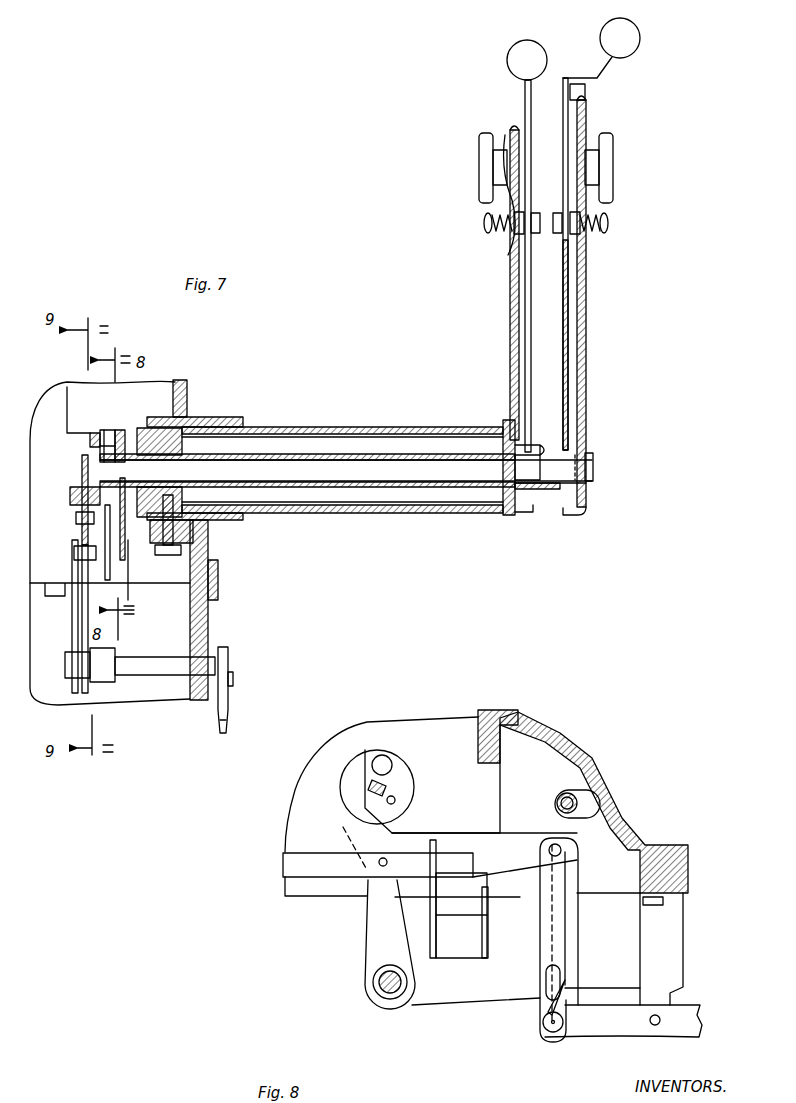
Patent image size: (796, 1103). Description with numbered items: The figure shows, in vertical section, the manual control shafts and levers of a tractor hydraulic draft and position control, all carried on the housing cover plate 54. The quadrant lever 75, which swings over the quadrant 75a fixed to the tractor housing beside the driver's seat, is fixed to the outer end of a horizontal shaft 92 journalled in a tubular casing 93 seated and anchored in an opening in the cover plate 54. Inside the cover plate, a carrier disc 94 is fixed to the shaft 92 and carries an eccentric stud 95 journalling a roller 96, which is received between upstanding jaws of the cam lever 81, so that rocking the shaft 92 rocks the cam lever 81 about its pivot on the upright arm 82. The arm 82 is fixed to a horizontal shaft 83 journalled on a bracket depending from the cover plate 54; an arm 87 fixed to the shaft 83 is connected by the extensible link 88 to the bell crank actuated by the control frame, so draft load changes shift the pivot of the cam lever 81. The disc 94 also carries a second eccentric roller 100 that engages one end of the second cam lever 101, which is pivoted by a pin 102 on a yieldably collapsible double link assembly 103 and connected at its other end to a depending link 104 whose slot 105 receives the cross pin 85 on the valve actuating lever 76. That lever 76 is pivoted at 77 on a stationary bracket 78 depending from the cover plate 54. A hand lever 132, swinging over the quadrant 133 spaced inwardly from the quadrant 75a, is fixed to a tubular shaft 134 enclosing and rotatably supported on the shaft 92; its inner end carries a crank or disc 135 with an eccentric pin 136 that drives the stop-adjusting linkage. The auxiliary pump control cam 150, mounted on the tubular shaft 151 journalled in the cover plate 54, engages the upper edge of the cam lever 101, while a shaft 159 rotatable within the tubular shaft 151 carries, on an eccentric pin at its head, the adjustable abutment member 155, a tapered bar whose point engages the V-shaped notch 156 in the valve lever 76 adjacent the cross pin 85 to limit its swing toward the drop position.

In FIG. 7, the hand lever 132 is at (520, 62).
In FIG. 7, the quadrant lever 75 is at (603, 72).
In FIG. 7, the quadrant 133 is at (510, 322).
In FIG. 7, the quadrant 75a is at (590, 328).
In FIG. 7, the housing cover plate 54 is at (240, 420).
In FIG. 8, the housing cover plate 54 is at (494, 712).
In FIG. 7, the tubular casing 93 is at (350, 427).
In FIG. 7, the tubular shaft 134 is at (400, 455).
In FIG. 7, the shaft 92 is at (480, 468).
In FIG. 8, the shaft 92 is at (392, 786).
In FIG. 7, the roller 100 is at (110, 434).
In FIG. 8, the roller 100 is at (380, 757).
In FIG. 7, the crank or disc 135 is at (125, 432).
In FIG. 7, the carrier 94 is at (90, 440).
In FIG. 8, the carrier 94 is at (395, 805).
In FIG. 7, the stud 95 is at (85, 495).
In FIG. 7, the roller 96 is at (80, 515).
In FIG. 7, the cam lever 81 is at (80, 536).
In FIG. 7, the cam lever 101 is at (80, 558).
In FIG. 8, the cam lever 101 is at (465, 840).
In FIG. 7, the pin 136 is at (165, 548).
In FIG. 7, the pin 102 is at (118, 552).
In FIG. 8, the pin 102 is at (378, 870).
In FIG. 7, the double link assembly 103 is at (128, 562).
In FIG. 8, the double link assembly 103 is at (283, 862).
In FIG. 7, the upright arm 82 is at (85, 622).
In FIG. 8, the upright arm 82 is at (372, 927).
In FIG. 7, the arm 87 is at (226, 650).
In FIG. 7, the shaft 83 is at (185, 670).
In FIG. 8, the shaft 83 is at (378, 978).
In FIG. 7, the link 88 is at (228, 722).
In FIG. 8, the shaft 159 is at (559, 796).
In FIG. 8, the tubular shaft 151 is at (568, 794).
In FIG. 8, the cam 150 is at (605, 800).
In FIG. 8, the link 104 is at (548, 932).
In FIG. 8, the slot 105 is at (550, 977).
In FIG. 8, the cross pin 85 is at (545, 1020).
In FIG. 8, the abutment member 155 is at (575, 922).
In FIG. 8, the V-shaped notch 156 is at (570, 1005).
In FIG. 8, the stationary bracket 78 is at (675, 943).
In FIG. 8, the valve actuating lever 76 is at (598, 1025).
In FIG. 8, the pivot 77 is at (656, 1026).